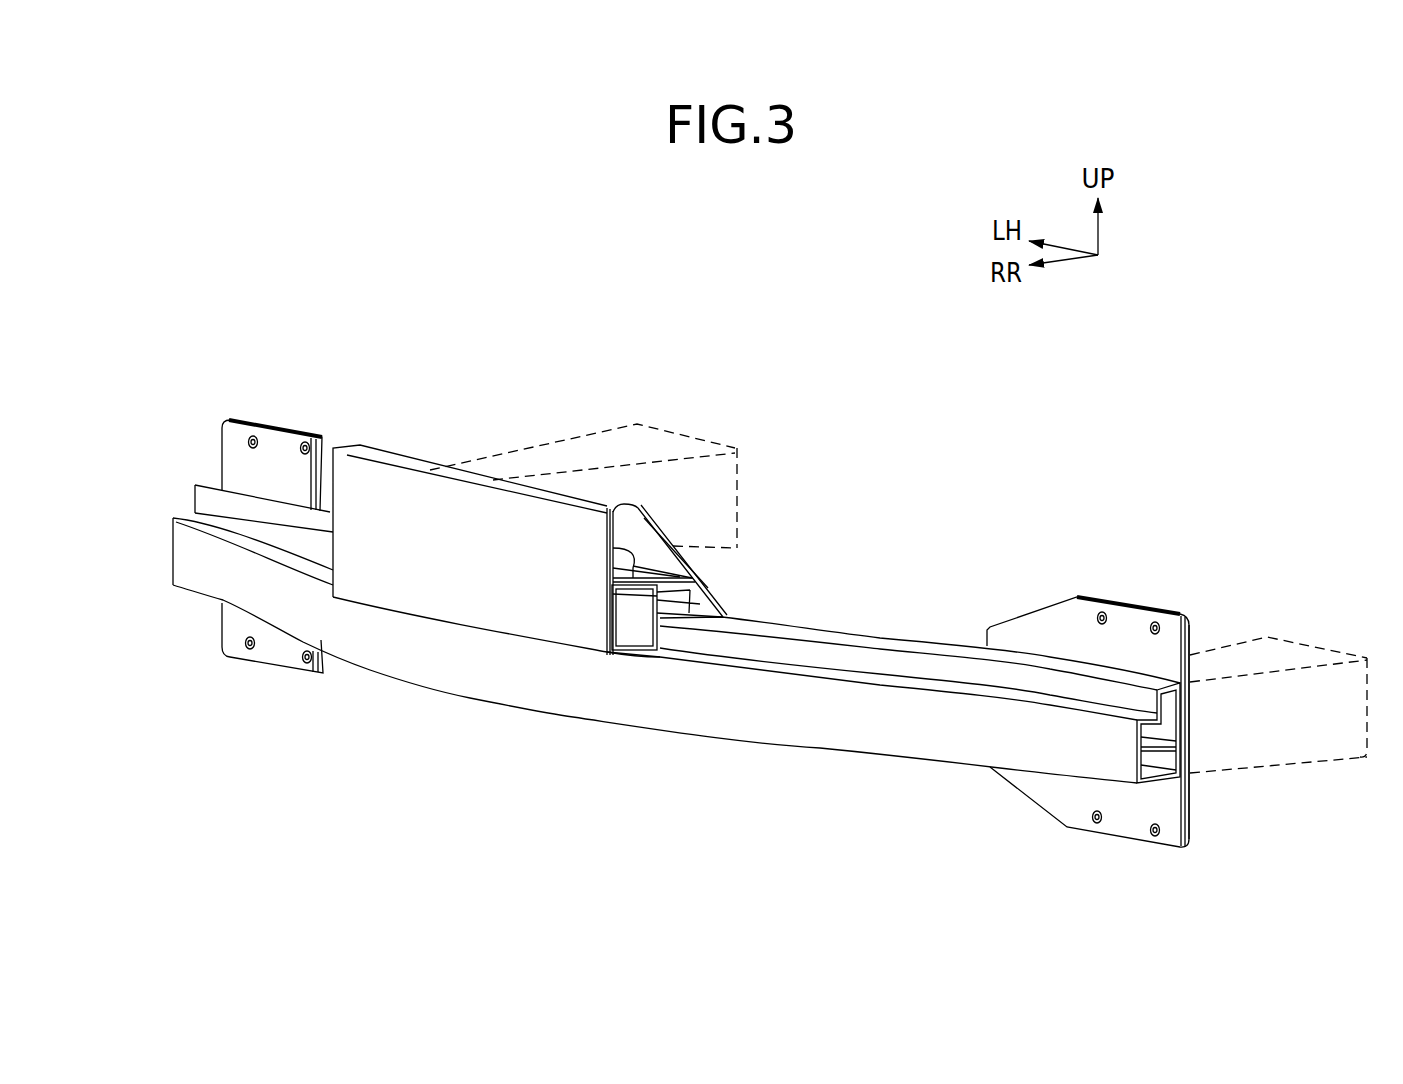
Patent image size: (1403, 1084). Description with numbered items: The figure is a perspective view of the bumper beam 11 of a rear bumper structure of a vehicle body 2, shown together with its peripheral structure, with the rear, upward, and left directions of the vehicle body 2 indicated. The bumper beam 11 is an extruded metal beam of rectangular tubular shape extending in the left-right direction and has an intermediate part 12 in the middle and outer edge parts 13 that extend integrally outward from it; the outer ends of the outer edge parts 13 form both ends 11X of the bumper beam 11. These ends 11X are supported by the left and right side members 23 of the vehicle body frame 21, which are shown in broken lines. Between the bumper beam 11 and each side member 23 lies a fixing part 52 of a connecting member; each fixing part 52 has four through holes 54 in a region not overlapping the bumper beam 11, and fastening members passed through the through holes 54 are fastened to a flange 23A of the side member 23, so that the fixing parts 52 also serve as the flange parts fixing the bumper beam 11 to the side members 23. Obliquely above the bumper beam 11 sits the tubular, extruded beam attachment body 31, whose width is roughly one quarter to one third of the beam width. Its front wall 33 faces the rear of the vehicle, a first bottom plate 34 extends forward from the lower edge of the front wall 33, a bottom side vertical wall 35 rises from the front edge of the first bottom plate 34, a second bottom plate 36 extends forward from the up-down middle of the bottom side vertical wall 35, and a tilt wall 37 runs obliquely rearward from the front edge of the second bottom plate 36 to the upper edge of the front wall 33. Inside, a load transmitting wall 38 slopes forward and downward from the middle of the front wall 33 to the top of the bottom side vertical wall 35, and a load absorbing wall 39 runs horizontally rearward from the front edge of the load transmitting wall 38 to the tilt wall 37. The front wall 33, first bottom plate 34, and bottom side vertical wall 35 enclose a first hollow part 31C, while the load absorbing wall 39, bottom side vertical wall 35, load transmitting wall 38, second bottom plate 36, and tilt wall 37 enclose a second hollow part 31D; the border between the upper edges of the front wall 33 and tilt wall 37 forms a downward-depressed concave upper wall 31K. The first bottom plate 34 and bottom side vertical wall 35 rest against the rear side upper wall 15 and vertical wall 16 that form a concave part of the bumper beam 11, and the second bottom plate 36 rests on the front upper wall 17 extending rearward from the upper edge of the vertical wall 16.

The vehicle body 2 is at (575, 539).
The bumper beam 11 is at (649, 690).
The both ends of the bumper beam 11X is at (190, 560).
The intermediate part 12 is at (460, 675).
The outer edge part 13 is at (268, 598).
The rear side upper wall 15 is at (995, 690).
The vertical wall 16 is at (946, 665).
The front upper wall 17 is at (843, 637).
The vehicle body frame 21 is at (1348, 785).
The side member 23 is at (745, 455).
The flange 23A is at (1190, 637).
The beam attachment body 31 is at (622, 506).
The first hollow part 31C is at (630, 598).
The second hollow part 31D is at (687, 595).
The concave upper wall 31K is at (488, 478).
The front wall 33 is at (503, 622).
The first bottom plate 34 is at (630, 655).
The bottom side vertical wall 35 is at (633, 614).
The second bottom plate 36 is at (685, 600).
The tilt wall 37 is at (668, 560).
The load transmitting wall 38 is at (613, 548).
The load absorbing wall 39 is at (673, 543).
The fixing part 52 is at (232, 430).
The through hole 54 is at (251, 434).